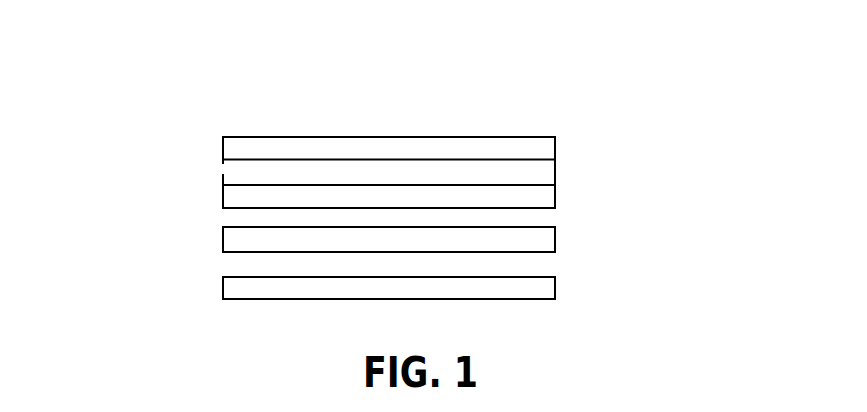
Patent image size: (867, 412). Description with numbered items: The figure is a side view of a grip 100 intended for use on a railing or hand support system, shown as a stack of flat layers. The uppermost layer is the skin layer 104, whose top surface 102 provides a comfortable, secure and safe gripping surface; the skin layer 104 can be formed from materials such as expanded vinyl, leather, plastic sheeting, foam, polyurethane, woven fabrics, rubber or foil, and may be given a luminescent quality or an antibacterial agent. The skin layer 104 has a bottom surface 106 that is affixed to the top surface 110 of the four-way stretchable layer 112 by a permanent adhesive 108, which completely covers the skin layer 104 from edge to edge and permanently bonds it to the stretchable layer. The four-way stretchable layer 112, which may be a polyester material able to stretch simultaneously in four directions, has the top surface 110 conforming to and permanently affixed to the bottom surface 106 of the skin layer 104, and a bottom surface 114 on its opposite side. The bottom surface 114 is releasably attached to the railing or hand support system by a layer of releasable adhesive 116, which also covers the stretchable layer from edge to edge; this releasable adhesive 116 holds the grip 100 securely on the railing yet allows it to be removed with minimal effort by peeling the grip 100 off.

The grip 100 is at (548, 52).
The top surface 102 is at (533, 133).
The skin layer 104 is at (540, 146).
The bottom surface 106 is at (535, 158).
The permanent adhesive 108 is at (235, 202).
The top surface 110 is at (542, 218).
The 4-way stretchable layer 112 is at (540, 235).
The bottom surface 114 is at (537, 250).
The releasable adhesive 116 is at (235, 288).